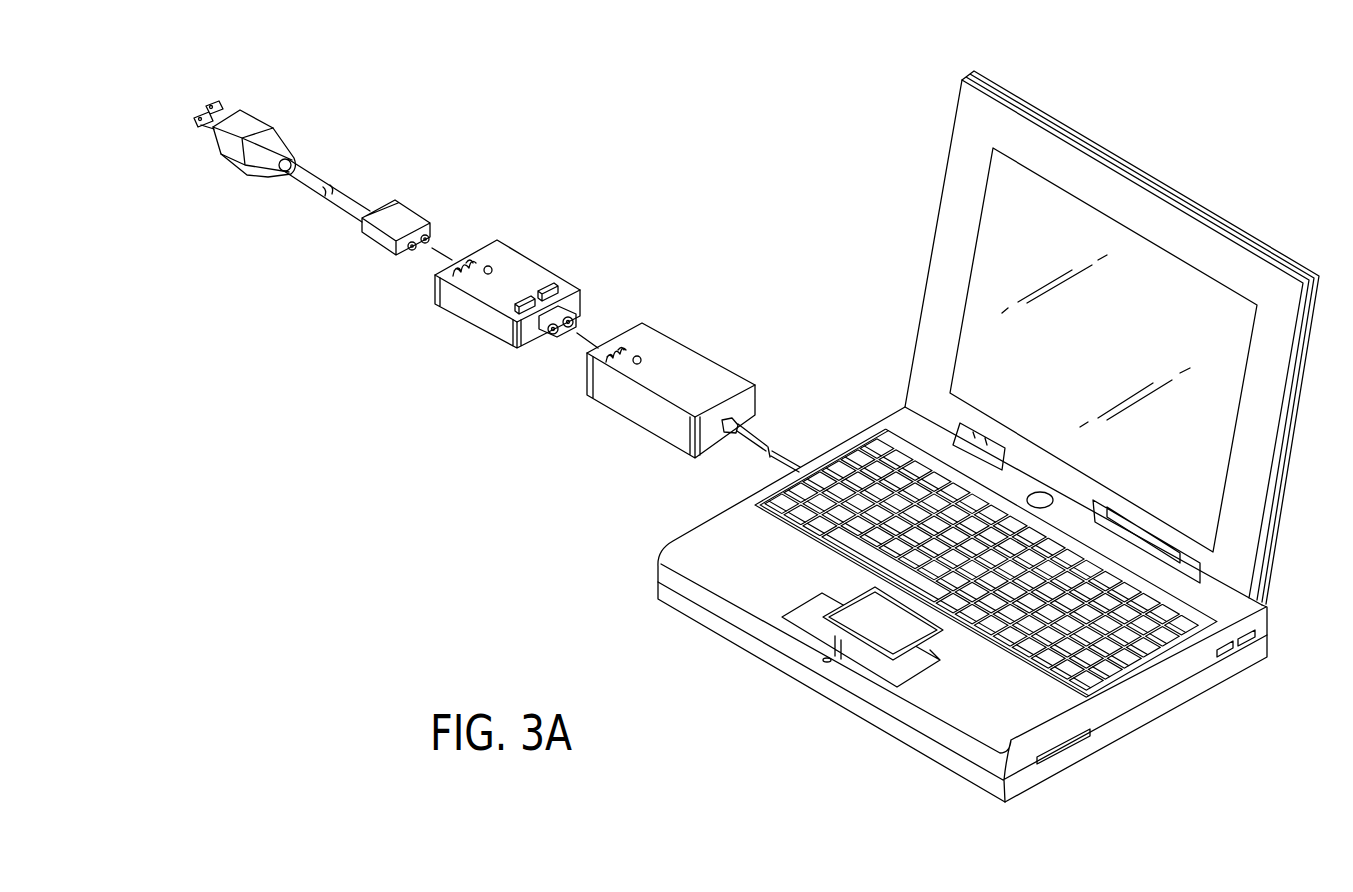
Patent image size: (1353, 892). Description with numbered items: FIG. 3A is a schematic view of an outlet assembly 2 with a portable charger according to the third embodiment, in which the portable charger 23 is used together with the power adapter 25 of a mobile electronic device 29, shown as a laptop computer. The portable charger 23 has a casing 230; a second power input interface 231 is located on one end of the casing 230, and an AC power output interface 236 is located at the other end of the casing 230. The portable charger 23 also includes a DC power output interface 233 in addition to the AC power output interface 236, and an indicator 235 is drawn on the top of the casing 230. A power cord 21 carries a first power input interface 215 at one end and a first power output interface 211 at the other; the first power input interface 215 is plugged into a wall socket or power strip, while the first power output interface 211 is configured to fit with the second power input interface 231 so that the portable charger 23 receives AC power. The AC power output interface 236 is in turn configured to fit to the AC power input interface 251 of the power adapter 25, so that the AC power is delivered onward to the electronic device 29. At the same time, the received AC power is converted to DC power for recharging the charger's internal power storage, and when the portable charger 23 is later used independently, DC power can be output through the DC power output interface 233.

The power supply system 2 is at (634, 129).
The power cord 21 is at (324, 184).
The first power output interface 211 is at (420, 214).
The first power input interface 215 is at (227, 107).
The portable charger 23 is at (468, 313).
The casing 230 is at (497, 330).
The second power input interface 231 is at (477, 256).
The DC power output interface 233 is at (548, 290).
The indicator light 235 is at (491, 267).
The AC power output interface 236 is at (565, 314).
The power adapter 25 is at (703, 373).
The AC power input interface 251 is at (633, 348).
The mobile electronic device 29 is at (710, 534).